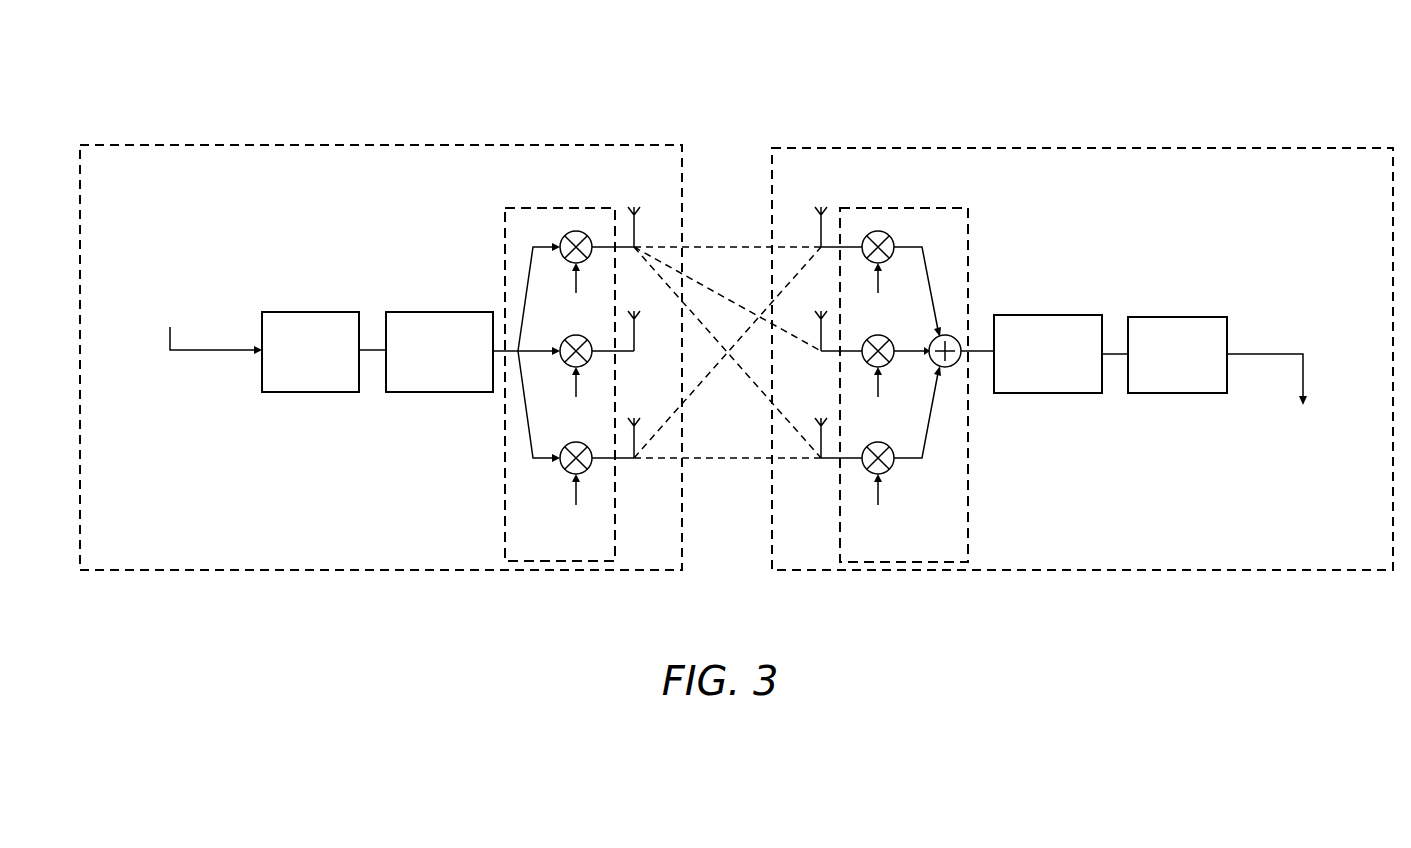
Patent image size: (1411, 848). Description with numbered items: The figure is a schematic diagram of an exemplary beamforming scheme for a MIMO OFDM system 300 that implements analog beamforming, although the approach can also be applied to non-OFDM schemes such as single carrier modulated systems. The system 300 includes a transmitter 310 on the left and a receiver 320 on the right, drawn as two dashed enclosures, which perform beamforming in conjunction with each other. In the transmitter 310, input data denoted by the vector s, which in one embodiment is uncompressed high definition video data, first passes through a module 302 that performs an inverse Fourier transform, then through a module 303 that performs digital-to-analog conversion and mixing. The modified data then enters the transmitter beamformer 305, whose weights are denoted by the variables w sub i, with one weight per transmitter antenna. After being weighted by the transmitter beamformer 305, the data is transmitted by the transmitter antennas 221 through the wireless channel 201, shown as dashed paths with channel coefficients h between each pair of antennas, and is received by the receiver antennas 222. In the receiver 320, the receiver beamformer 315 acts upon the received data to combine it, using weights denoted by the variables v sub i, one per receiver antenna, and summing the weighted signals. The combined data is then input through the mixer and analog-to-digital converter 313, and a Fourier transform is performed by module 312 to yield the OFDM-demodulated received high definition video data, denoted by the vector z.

The system 300 is at (708, 72).
The transmitter 310 is at (288, 145).
The receiver 320 is at (1112, 148).
The module for performing an inverse Fourier transform 302 is at (312, 393).
The module for performing digital-to-analog conversion and mixing 303 is at (442, 393).
The transmitter beamformer 305 is at (532, 208).
The transmitter antennas 221 is at (632, 204).
The wireless channel 201 is at (722, 510).
The receiver antennas 222 is at (822, 204).
The receiver beamformer 315 is at (923, 208).
The mixer and analog-to-digital converter 313 is at (1048, 315).
The module for performing a Fourier transform 312 is at (1178, 316).